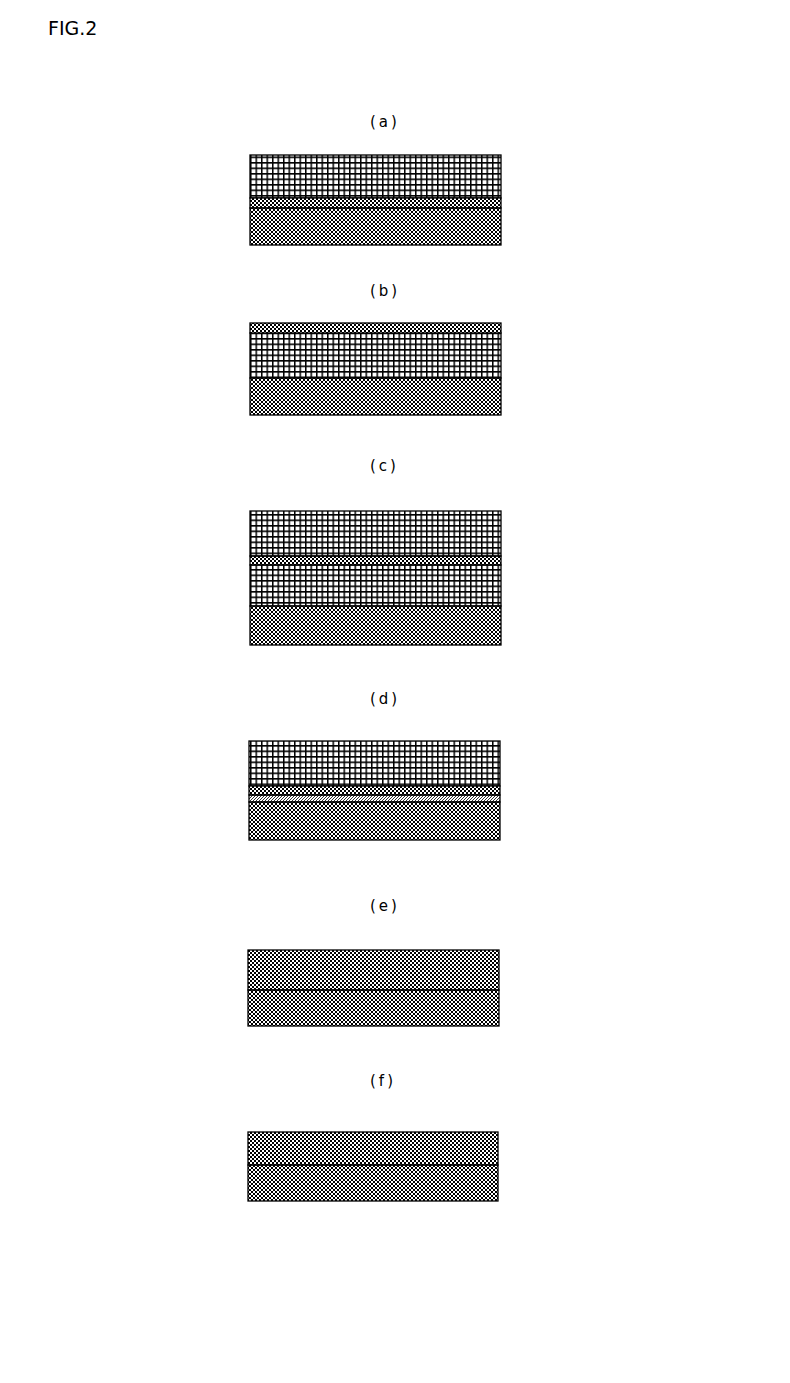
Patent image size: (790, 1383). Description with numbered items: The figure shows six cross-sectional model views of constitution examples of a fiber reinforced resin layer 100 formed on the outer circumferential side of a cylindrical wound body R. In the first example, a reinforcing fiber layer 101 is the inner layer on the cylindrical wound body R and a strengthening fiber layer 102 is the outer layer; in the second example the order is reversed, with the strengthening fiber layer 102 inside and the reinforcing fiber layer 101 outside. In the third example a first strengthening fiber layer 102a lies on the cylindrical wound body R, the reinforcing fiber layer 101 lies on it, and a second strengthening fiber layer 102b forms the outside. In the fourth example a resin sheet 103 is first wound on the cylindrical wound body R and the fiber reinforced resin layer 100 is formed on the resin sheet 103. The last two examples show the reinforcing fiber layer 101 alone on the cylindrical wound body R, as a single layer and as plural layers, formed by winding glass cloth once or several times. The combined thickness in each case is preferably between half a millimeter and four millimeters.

The fiber reinforced resin layer 100 is at (613, 157).
The reinforcing fiber layer 101 is at (493, 195).
The strengthening fiber layer 102 is at (493, 168).
The first strengthening fiber layer 102a is at (493, 577).
The second strengthening fiber layer 102b is at (493, 530).
The resin sheet 103 is at (492, 790).
The cylindrical wound body R is at (493, 219).